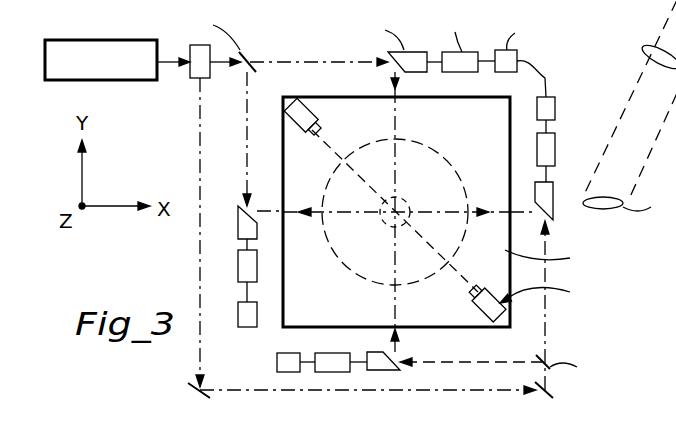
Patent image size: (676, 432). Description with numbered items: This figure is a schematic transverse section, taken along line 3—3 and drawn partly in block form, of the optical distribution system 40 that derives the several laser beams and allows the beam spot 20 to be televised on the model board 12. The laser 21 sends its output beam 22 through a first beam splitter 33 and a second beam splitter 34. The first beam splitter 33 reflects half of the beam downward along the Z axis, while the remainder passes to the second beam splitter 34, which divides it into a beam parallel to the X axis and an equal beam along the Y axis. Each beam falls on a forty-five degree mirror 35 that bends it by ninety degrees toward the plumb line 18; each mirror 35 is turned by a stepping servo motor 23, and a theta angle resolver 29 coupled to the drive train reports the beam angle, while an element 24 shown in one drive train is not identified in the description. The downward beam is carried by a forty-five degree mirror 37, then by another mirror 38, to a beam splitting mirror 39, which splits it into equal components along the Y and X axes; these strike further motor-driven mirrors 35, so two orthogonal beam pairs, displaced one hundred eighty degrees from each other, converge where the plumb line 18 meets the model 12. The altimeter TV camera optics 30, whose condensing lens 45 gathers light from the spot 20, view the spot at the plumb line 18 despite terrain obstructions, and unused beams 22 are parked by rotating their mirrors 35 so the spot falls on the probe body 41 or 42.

The laser 21 is at (101, 40).
The first beam splitter 33 is at (188, 72).
The second beam splitter 34 is at (258, 69).
The 45° angle mirror 35 is at (401, 72).
The stepping servo motor 23 is at (452, 72).
The mirror drive unit 24 is at (241, 250).
The θ angle resolver 29 is at (257, 366).
The model board 12 is at (483, 137).
The laser beam 22 is at (395, 124).
The altimeter TV camera optics 30 is at (296, 130).
The altimeter camera 3 is at (571, 310).
The probe body 42 is at (380, 200).
The plumb line 18 is at (400, 212).
The probe body 41 is at (510, 253).
The condensing lens 45 is at (647, 52).
The beam spot 20 is at (608, 197).
The 45° mirror 37 is at (188, 385).
The 45° mirror 38 is at (552, 385).
The beam splitting mirror 39 is at (540, 361).
The optical distribution system 40 is at (185, 333).